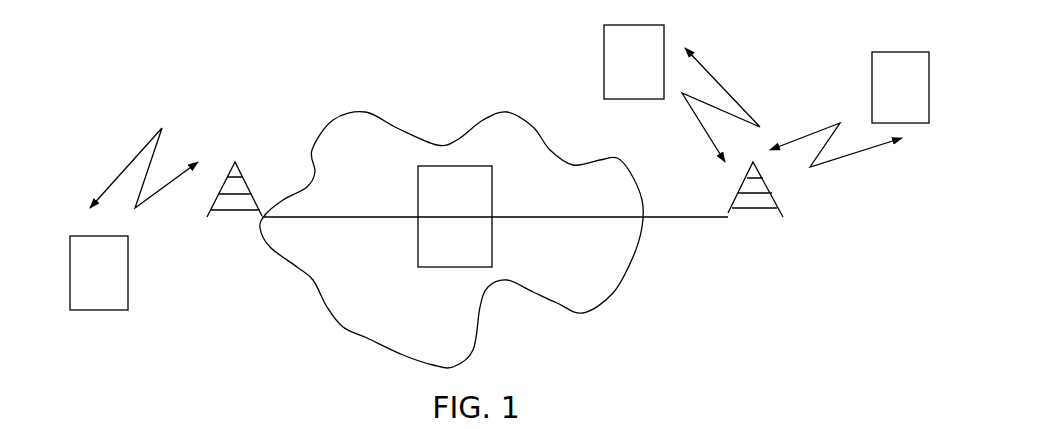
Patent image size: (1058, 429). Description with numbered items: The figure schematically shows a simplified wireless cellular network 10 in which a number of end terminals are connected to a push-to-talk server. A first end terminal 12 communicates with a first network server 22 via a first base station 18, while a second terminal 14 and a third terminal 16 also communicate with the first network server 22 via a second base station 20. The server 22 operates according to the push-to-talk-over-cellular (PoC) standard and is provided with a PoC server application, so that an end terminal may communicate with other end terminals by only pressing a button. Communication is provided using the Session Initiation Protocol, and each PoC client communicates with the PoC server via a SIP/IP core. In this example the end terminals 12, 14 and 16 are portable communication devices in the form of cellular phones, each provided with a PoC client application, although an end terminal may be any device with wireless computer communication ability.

The wireless cellular network 10 is at (367, 111).
The first end terminal 12 is at (134, 219).
The second terminal 14 is at (849, 109).
The third terminal 16 is at (682, 93).
The first base station 18 is at (227, 210).
The second base station 20 is at (757, 208).
The first network server 22 is at (455, 216).